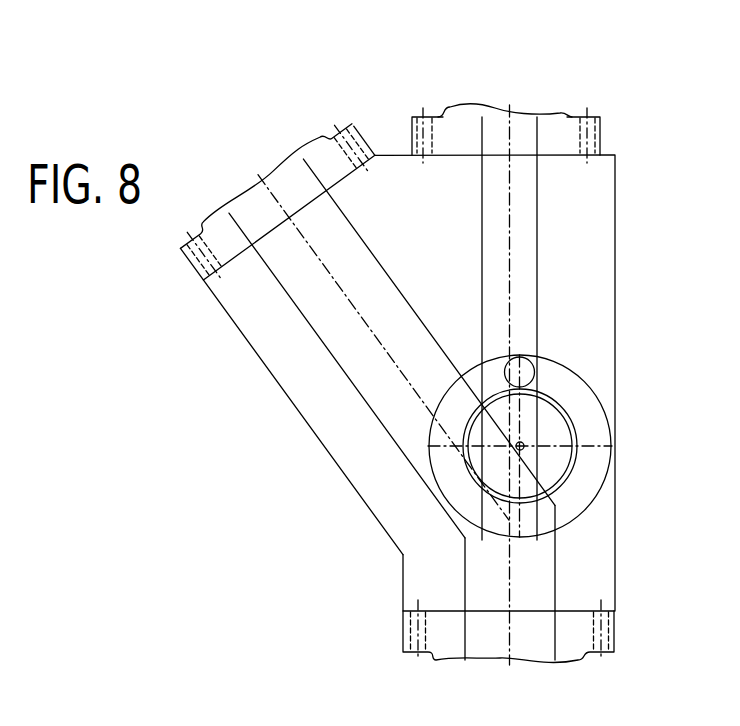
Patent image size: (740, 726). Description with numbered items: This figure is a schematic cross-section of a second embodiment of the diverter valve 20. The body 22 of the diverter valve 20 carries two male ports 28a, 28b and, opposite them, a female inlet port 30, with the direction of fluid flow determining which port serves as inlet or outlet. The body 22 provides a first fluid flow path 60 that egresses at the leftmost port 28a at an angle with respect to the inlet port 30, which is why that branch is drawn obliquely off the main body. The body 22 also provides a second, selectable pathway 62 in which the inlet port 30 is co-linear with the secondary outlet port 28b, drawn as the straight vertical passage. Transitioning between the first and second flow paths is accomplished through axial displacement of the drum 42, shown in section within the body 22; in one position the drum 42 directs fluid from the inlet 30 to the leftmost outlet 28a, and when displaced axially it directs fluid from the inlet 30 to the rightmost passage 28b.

The diverter valve 20 is at (575, 68).
The body portion 22 is at (600, 285).
The male port 28a is at (325, 307).
The male port 28b is at (526, 201).
The female port 30 is at (530, 652).
The drum 42 is at (570, 412).
The first fluid flow path 60 is at (318, 227).
The second selectable pathway 62 is at (527, 243).